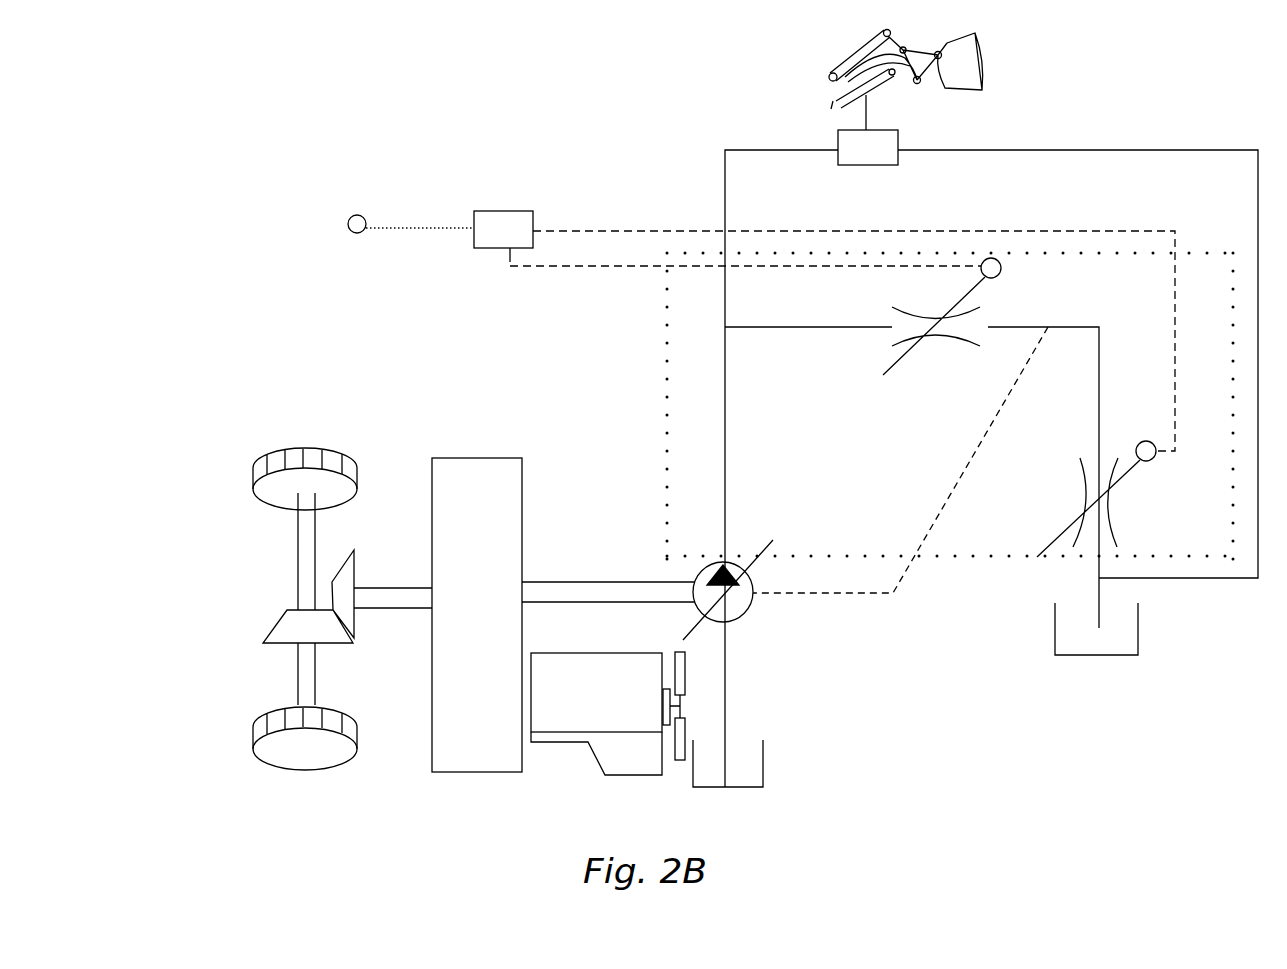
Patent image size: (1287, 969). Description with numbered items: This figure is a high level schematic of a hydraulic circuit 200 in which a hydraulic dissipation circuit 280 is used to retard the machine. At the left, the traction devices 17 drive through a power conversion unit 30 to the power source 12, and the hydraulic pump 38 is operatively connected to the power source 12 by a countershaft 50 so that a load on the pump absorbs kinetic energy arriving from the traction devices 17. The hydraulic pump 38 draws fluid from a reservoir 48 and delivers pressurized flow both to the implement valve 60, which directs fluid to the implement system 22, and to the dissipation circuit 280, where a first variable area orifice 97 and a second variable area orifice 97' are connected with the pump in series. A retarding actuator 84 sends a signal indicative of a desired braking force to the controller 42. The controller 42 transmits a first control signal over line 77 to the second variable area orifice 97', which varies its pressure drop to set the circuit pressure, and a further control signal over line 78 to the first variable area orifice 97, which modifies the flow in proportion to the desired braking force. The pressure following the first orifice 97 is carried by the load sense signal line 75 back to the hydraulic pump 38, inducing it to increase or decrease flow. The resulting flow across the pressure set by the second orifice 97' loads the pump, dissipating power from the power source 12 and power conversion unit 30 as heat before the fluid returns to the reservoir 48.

The hydraulic circuit 200 is at (1160, 90).
The hydraulic dissipation circuit 280 is at (992, 560).
The implement system 22 is at (822, 65).
The implement valve 60 is at (898, 140).
The controller 42 is at (513, 211).
The retarding actuator 84 is at (347, 225).
The line 77 is at (983, 227).
The line 78 is at (620, 265).
The first variable area orifice 97 is at (941, 348).
The load sense signal line 75 is at (920, 545).
The second variable area orifice 97' is at (1123, 499).
The reservoir 48 is at (1077, 662).
The hydraulic pump 38 is at (743, 617).
The power conversion unit 30 is at (467, 457).
The power source 12 is at (608, 706).
The countershaft 50 is at (527, 677).
The traction devices 17 is at (238, 732).